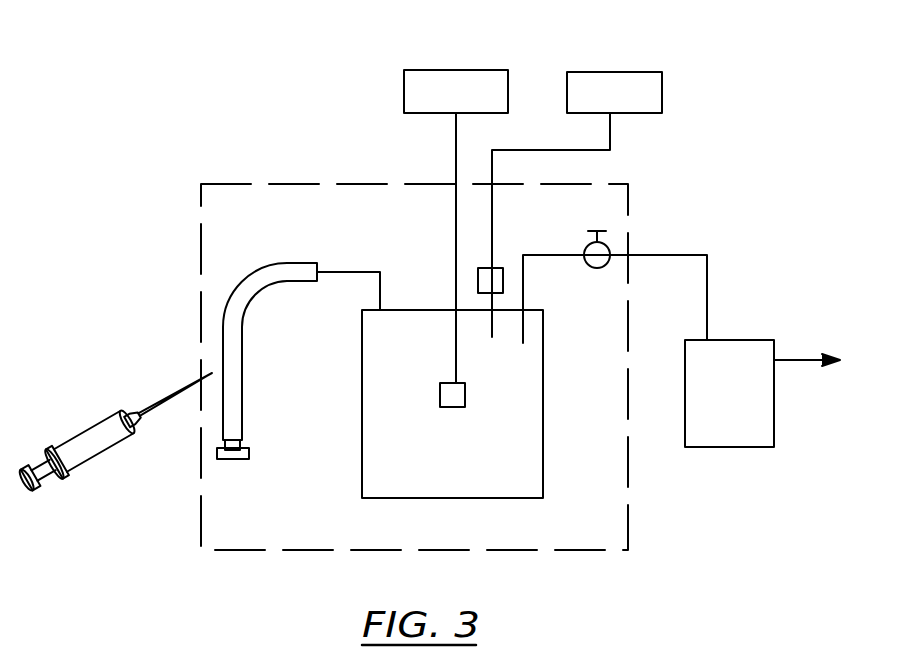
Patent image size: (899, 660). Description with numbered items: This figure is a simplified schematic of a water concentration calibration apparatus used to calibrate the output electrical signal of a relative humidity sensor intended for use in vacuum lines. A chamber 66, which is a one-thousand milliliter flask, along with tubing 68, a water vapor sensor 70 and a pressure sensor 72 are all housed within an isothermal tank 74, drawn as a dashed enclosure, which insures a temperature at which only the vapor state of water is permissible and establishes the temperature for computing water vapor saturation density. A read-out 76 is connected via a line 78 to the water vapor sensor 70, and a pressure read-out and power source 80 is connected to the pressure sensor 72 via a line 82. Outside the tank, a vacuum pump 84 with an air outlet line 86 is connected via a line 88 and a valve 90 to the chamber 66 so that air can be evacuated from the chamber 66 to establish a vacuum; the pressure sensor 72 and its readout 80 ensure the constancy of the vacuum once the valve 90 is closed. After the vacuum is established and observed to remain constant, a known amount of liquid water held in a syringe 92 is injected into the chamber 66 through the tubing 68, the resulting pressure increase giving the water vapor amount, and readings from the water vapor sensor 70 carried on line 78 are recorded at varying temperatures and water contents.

The chamber 66 is at (543, 460).
The tubing 68 is at (287, 263).
The water vapor sensor 70 is at (446, 407).
The pressure sensor 72 is at (503, 269).
The isothermal tank 74 is at (305, 184).
The read-out 76 is at (467, 70).
The line 78 is at (455, 150).
The pressure read-out and power source 80 is at (650, 72).
The line 82 is at (611, 134).
The vacuum pump 84 is at (722, 447).
The air outlet line 86 is at (800, 360).
The line 88 is at (686, 254).
The valve 90 is at (597, 268).
The syringe 92 is at (102, 412).